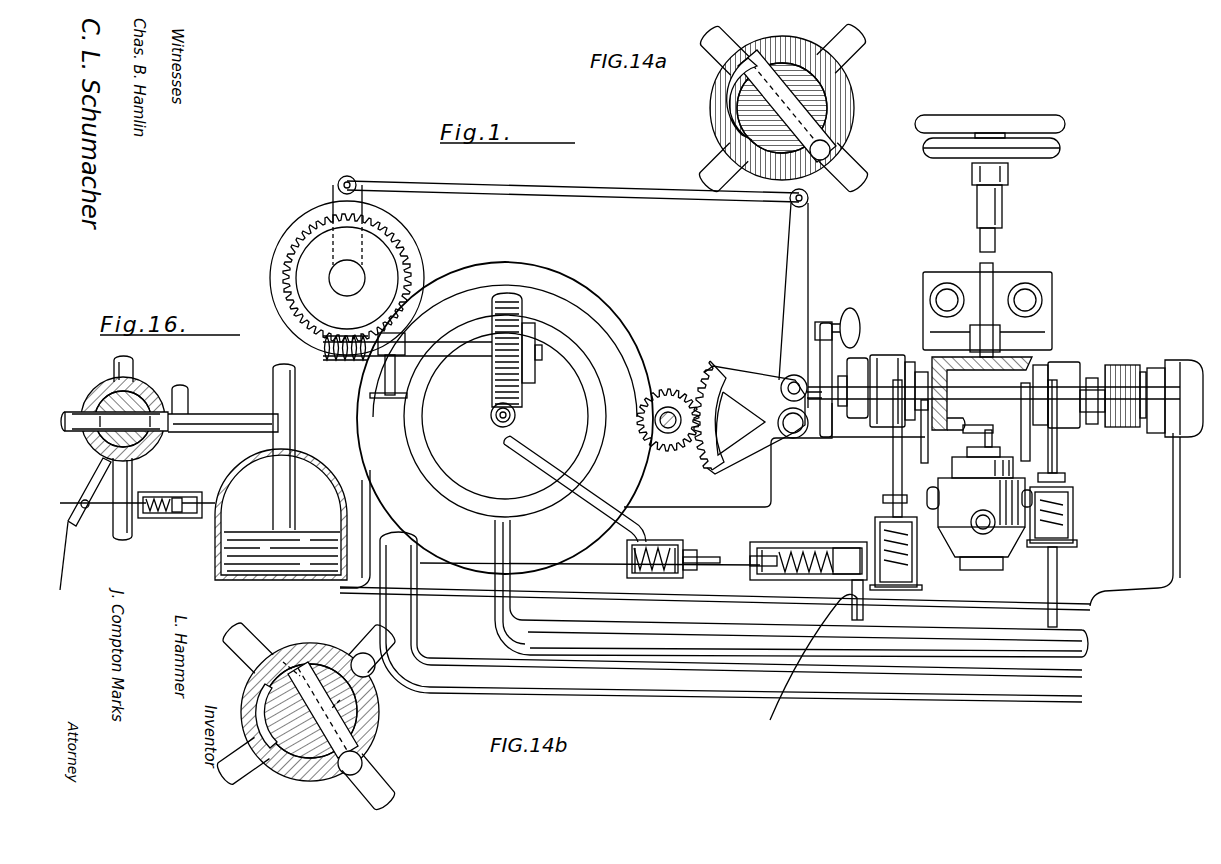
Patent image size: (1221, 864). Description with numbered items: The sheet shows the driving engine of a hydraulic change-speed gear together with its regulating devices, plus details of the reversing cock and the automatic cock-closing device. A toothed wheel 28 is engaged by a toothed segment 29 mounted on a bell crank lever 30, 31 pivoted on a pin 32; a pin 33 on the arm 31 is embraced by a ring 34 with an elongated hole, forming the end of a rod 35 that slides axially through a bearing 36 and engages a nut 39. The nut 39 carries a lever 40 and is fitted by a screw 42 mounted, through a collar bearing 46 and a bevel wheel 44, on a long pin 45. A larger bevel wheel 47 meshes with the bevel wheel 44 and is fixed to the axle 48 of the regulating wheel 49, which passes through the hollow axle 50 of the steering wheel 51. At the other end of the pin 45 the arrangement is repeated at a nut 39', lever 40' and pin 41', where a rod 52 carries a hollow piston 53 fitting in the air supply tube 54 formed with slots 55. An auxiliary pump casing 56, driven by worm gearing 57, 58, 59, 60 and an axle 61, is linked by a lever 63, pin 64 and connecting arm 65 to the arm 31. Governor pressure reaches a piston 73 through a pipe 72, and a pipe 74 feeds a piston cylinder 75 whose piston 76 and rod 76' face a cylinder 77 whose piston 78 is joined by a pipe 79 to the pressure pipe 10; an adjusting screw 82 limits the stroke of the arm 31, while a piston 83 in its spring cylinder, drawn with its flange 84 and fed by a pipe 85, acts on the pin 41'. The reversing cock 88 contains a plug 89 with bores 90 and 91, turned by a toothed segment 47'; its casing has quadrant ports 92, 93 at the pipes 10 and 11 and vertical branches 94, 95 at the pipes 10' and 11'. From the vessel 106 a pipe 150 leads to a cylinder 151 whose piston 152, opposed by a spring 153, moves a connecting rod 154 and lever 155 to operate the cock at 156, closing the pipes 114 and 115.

In FIG. 1, the pressure pipe 10 is at (824, 638).
In FIG. 14A, the pressure pipe 10 is at (708, 169).
In FIG. 14B, the pressure pipe 10 is at (257, 641).
In FIG. 1, the suction pipe 11 is at (754, 617).
In FIG. 14A, the suction pipe 11 is at (724, 53).
In FIG. 14B, the suction pipe 11 is at (241, 766).
In FIG. 14A, the outlet pipe 10' is at (859, 48).
In FIG. 14B, the outlet pipe 10' is at (387, 783).
In FIG. 14A, the outlet pipe 11' is at (845, 178).
In FIG. 14B, the outlet pipe 11' is at (385, 668).
In FIG. 1, the toothed wheel 28 is at (672, 388).
In FIG. 1, the toothed segment 29 is at (703, 372).
In FIG. 1, the bell crank lever 30 is at (740, 448).
In FIG. 1, the bell crank lever arm 31 is at (786, 250).
In FIG. 1, the pivot pin 32 is at (793, 438).
In FIG. 1, the pin 33 is at (781, 388).
In FIG. 1, the ring 34 is at (790, 376).
In FIG. 1, the rod 35 is at (864, 420).
In FIG. 1, the bearing 36 is at (824, 440).
In FIG. 1, the nut 39 is at (887, 370).
In FIG. 1, the nut 39' is at (1056, 376).
In FIG. 1, the lever 40 is at (859, 435).
In FIG. 1, the lever 40' is at (1130, 379).
In FIG. 1, the pin 41' is at (1083, 402).
In FIG. 1, the screw 42 is at (993, 437).
In FIG. 1, the bevel wheel 44 is at (912, 362).
In FIG. 1, the long pin 45 is at (972, 402).
In FIG. 1, the collar bearing 46 is at (924, 458).
In FIG. 1, the bevel wheel 47 is at (982, 393).
In FIG. 1, the toothed segment 47' is at (963, 437).
In FIG. 1, the axle 48 is at (978, 280).
In FIG. 1, the regulating wheel 49 is at (975, 115).
In FIG. 1, the hollow axle 50 is at (1003, 207).
In FIG. 1, the steering wheel 51 is at (1043, 160).
In FIG. 1, the rod 52 is at (1096, 424).
In FIG. 1, the hollow piston 53 is at (1160, 366).
In FIG. 1, the tube 54 is at (1175, 438).
In FIG. 1, the slots 55 is at (1141, 420).
In FIG. 1, the casing 56 is at (300, 270).
In FIG. 1, the worm gearing 57 is at (517, 414).
In FIG. 1, the worm gearing 58 is at (492, 380).
In FIG. 1, the worm gearing 59 is at (343, 358).
In FIG. 1, the worm gearing 60 is at (300, 318).
In FIG. 1, the axle 61 is at (497, 414).
In FIG. 1, the lever 63 is at (365, 218).
In FIG. 1, the pin 64 is at (347, 176).
In FIG. 1, the connecting arm 65 is at (522, 196).
In FIG. 1, the pipe 72 is at (496, 618).
In FIG. 1, the piston 73 is at (920, 565).
In FIG. 1, the pipe 74 is at (518, 458).
In FIG. 1, the piston cylinder 75 is at (700, 550).
In FIG. 1, the piston 76 is at (655, 547).
In FIG. 1, the piston rod 76' is at (705, 553).
In FIG. 1, the cylinder 77 is at (806, 540).
In FIG. 1, the piston 78 is at (843, 548).
In FIG. 1, the pipe 79 is at (808, 660).
In FIG. 1, the adjusting screw 82 is at (854, 308).
In FIG. 1, the piston 83 is at (1074, 520).
In FIG. 1, the flange 84 is at (1078, 545).
In FIG. 1, the pipe 85 is at (1058, 585).
In FIG. 1, the reversing cock 88 is at (1000, 570).
In FIG. 14A, the reversing cock 88 is at (850, 100).
In FIG. 14B, the reversing cock 88 is at (312, 768).
In FIG. 14A, the plug 89 is at (810, 118).
In FIG. 14B, the plug 89 is at (360, 722).
In FIG. 14A, the bore 90 is at (790, 160).
In FIG. 14A, the bore 91 is at (716, 124).
In FIG. 14B, the bore 91 is at (308, 685).
In FIG. 14A, the quadrant port 92 is at (740, 104).
In FIG. 14B, the quadrant port 93 is at (262, 700).
In FIG. 14B, the vertical branch 94 is at (362, 762).
In FIG. 14B, the vertical branch 95 is at (368, 676).
In FIG. 16, the vessel 106 is at (215, 572).
In FIG. 16, the pipe 114 is at (230, 418).
In FIG. 16, the pipe 115 is at (135, 362).
In FIG. 16, the pipe 150 is at (217, 508).
In FIG. 16, the cylinder 151 is at (190, 490).
In FIG. 16, the piston 152 is at (170, 512).
In FIG. 16, the spring 153 is at (168, 486).
In FIG. 16, the connecting rod 154 is at (100, 520).
In FIG. 16, the lever 155 is at (90, 450).
In FIG. 16, the cock connection 156 is at (96, 529).